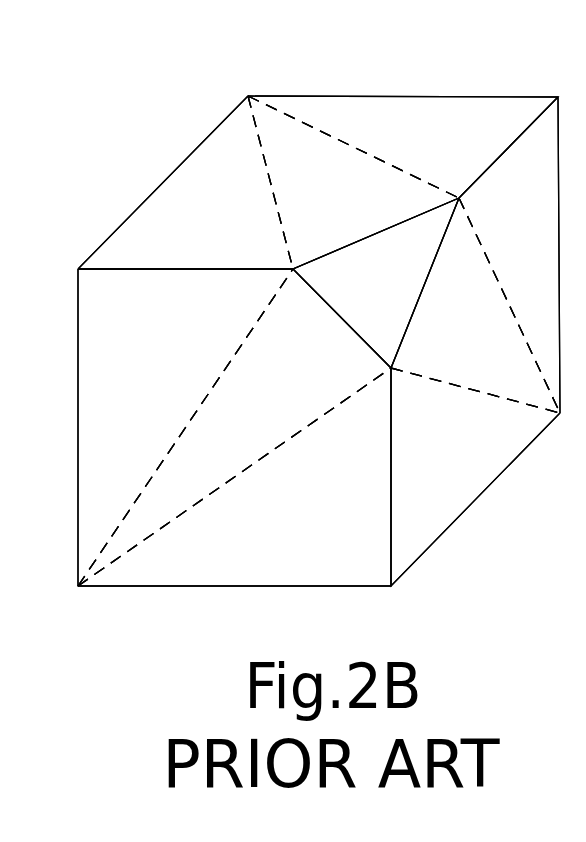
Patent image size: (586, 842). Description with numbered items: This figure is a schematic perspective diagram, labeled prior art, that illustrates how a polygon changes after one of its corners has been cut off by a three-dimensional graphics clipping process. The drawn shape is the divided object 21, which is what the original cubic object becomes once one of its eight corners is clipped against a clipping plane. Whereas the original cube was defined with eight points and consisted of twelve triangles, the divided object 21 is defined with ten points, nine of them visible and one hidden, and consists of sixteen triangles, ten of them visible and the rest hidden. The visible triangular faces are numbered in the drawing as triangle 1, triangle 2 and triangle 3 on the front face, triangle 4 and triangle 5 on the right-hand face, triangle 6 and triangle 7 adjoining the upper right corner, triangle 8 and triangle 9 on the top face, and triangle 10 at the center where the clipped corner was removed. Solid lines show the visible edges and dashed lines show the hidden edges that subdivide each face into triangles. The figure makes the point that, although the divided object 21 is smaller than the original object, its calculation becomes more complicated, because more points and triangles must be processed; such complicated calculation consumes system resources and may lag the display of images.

The divided object 21 is at (472, 123).
The tetrahedral sub-element 1 is at (185, 427).
The tetrahedral sub-element 2 is at (234, 427).
The tetrahedral sub-element 3 is at (234, 477).
The tetrahedral sub-element 4 is at (475, 477).
The tetrahedral sub-element 5 is at (475, 305).
The tetrahedral sub-element 6 is at (509, 255).
The tetrahedral sub-element 7 is at (403, 147).
The tetrahedral sub-element 8 is at (353, 182).
The tetrahedral sub-element 9 is at (185, 182).
The tetrahedral sub-element 10 is at (376, 283).